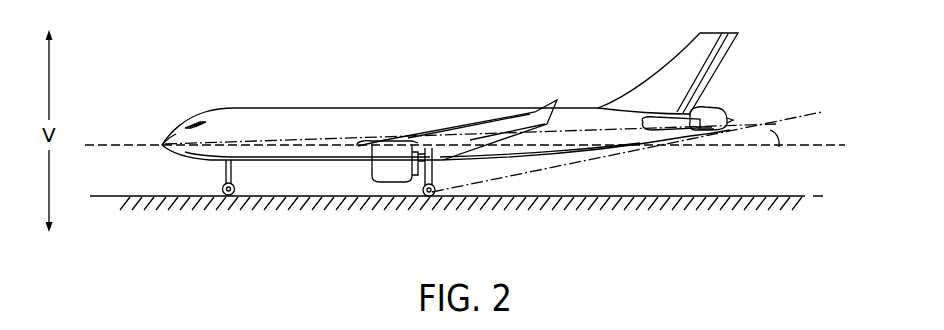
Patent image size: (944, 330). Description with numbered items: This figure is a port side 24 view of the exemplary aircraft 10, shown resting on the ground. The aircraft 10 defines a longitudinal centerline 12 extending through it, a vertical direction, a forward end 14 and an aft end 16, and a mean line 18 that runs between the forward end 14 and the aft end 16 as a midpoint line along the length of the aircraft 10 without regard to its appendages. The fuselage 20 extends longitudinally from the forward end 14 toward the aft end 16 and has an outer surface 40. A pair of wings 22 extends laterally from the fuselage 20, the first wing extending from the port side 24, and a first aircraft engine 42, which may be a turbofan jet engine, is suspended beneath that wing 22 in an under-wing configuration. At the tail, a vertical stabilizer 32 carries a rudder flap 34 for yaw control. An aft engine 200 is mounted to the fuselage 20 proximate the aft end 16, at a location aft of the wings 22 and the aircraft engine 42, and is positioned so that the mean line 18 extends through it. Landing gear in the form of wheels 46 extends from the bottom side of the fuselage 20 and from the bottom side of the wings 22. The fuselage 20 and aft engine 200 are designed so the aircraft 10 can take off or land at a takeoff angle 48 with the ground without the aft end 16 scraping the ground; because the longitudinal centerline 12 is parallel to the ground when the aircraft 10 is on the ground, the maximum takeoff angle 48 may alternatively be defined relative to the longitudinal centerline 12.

The aircraft 10 is at (477, 129).
The longitudinal centerline 12 is at (128, 143).
The forward end 14 is at (165, 168).
The aft end 16 is at (750, 122).
The mean line 18 is at (288, 138).
The fuselage 20 is at (245, 152).
The wings 22 is at (500, 132).
The port side 24 is at (521, 166).
The vertical stabilizer 32 is at (693, 62).
The rudder flap 34 is at (727, 57).
The outer surface 40 is at (363, 151).
The first aircraft engine 42 is at (373, 191).
The wheels 46 is at (424, 194).
The takeoff angle 48 is at (779, 147).
The aft engine 200 is at (725, 96).